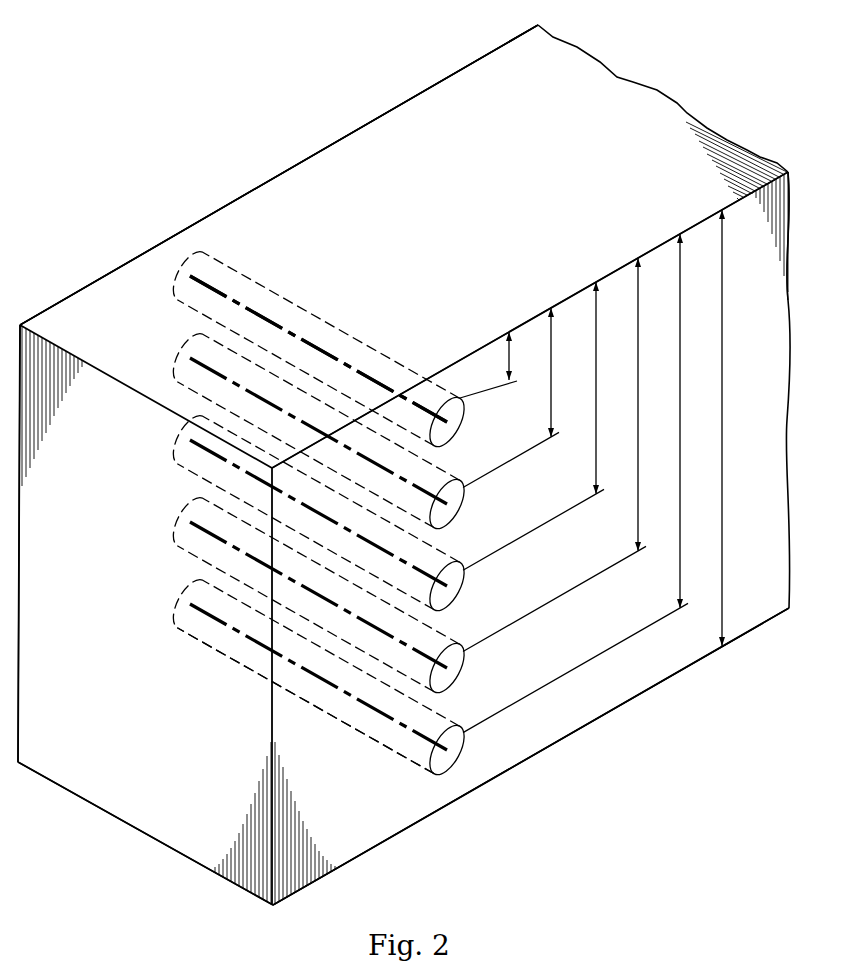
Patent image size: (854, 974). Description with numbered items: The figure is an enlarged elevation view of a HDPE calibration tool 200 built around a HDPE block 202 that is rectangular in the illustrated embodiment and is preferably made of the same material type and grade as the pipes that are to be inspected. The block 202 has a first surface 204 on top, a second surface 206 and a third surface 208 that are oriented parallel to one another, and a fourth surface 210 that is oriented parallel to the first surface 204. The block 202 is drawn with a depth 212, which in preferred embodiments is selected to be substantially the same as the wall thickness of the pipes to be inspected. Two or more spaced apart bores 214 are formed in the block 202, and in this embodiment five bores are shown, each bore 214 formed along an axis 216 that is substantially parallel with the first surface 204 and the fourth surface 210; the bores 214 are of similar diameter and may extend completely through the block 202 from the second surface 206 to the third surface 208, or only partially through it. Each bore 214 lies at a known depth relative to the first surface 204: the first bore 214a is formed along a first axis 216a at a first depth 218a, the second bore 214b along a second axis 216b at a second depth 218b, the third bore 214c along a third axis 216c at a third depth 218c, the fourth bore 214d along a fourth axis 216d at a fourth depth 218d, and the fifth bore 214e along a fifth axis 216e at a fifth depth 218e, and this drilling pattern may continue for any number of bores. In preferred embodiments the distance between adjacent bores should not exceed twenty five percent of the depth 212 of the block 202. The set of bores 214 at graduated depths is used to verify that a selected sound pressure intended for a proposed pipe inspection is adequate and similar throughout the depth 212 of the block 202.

The HDPE calibration tool 200 is at (207, 108).
The HDPE block 202 is at (404, 98).
The first surface 204 is at (327, 157).
The second surface 206 is at (135, 813).
The third surface 208 is at (215, 210).
The fourth surface 210 is at (400, 833).
The depth 212 is at (724, 426).
The bore 214 is at (343, 727).
The first bore 214a is at (449, 431).
The second bore 214b is at (449, 513).
The third bore 214c is at (449, 595).
The fourth bore 214d is at (449, 677).
The fifth bore 214e is at (448, 760).
The axis 216 is at (270, 303).
The first axis 216a is at (200, 286).
The second axis 216b is at (200, 368).
The third axis 216c is at (200, 450).
The fourth axis 216d is at (200, 532).
The fifth axis 216e is at (200, 614).
The first depth 218a is at (508, 362).
The second depth 218b is at (550, 336).
The third depth 218c is at (595, 310).
The fourth depth 218d is at (637, 286).
The fifth depth 218e is at (679, 262).